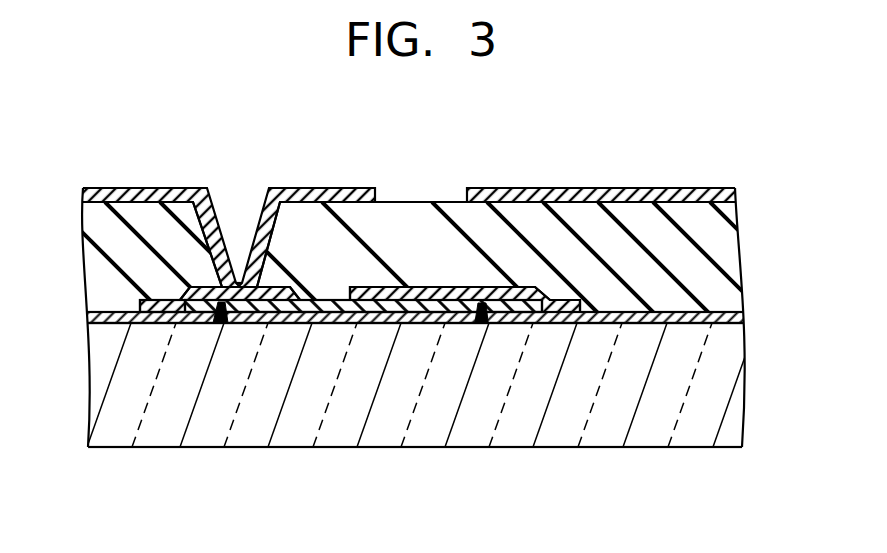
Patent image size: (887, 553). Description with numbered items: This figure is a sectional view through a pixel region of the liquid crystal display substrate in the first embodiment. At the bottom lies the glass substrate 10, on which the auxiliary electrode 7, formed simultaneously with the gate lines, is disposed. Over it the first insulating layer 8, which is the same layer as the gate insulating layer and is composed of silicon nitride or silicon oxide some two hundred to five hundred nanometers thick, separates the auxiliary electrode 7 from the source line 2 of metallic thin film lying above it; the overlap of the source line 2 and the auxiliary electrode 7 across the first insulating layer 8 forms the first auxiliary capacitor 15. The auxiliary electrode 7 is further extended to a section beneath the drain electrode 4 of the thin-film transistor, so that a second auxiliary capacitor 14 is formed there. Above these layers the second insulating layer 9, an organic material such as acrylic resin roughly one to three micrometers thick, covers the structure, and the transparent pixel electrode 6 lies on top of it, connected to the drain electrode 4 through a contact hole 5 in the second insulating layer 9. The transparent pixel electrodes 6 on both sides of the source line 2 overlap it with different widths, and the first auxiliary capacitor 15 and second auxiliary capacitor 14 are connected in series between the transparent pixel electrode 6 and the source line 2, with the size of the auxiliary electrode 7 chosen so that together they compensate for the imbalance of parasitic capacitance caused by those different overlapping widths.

The source line 2 is at (406, 287).
The drain electrode 4 is at (157, 298).
The contact hole 5 is at (239, 200).
The transparent pixel electrode 6 is at (150, 188).
The auxiliary electrode 7 is at (427, 313).
The first insulating layer 8 is at (627, 327).
The second insulating layer 9 is at (587, 227).
The glass substrate 10 is at (320, 447).
The second auxiliary capacitor 14 is at (218, 325).
The first auxiliary capacitor 15 is at (473, 325).